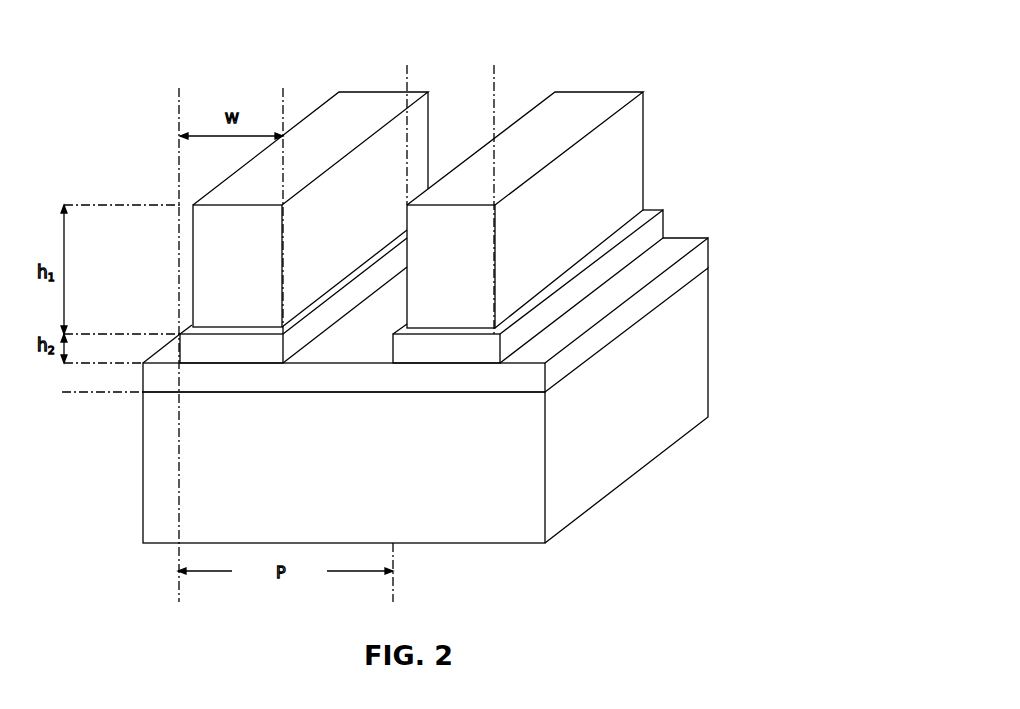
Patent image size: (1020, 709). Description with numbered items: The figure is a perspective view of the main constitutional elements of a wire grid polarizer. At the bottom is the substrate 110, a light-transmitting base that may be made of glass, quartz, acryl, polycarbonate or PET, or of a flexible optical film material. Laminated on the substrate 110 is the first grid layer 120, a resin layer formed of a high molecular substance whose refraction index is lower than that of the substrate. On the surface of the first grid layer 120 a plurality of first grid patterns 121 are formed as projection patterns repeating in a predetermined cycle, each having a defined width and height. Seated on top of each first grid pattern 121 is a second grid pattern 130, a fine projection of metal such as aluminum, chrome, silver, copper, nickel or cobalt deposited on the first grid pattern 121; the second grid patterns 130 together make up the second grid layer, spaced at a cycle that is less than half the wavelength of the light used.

The substrate 110 is at (695, 352).
The first grid layer 120 is at (697, 258).
The first grid pattern 121 is at (653, 230).
The second grid pattern 130 is at (632, 146).